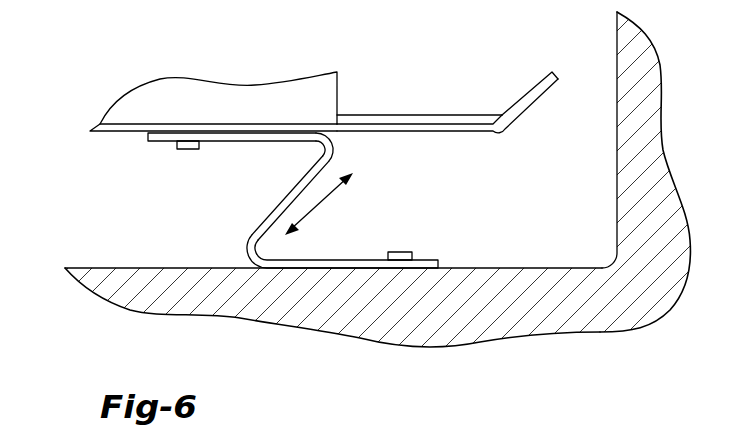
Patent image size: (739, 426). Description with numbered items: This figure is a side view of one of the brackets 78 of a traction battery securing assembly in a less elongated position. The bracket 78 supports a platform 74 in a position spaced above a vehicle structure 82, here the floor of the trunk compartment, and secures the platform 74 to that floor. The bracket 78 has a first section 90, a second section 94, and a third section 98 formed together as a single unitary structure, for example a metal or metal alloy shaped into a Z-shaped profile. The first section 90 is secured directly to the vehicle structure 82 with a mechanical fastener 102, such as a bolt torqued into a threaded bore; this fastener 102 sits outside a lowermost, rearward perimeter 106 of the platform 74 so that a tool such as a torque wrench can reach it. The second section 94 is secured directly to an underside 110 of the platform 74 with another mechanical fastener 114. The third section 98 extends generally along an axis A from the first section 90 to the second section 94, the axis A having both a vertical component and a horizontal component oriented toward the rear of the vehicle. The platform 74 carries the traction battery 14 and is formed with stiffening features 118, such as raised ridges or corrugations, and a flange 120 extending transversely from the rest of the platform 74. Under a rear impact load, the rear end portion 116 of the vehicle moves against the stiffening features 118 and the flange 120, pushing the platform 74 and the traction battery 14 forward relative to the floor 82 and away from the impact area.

The traction battery 14 is at (272, 104).
The platform 74 is at (457, 132).
The bracket 78 is at (337, 148).
The vehicle structure 82 is at (132, 270).
The first section 90 is at (332, 263).
The second section 94 is at (262, 142).
The third section 98 is at (277, 207).
The mechanical fastener 102 is at (400, 252).
The lowermost, rearward perimeter 106 is at (353, 125).
The underside 110 is at (108, 133).
The mechanical fastener 114 is at (186, 150).
The rear end portion 116 is at (618, 152).
The stiffening features 118 is at (480, 113).
The flange 120 is at (535, 93).
The axis A is at (320, 202).